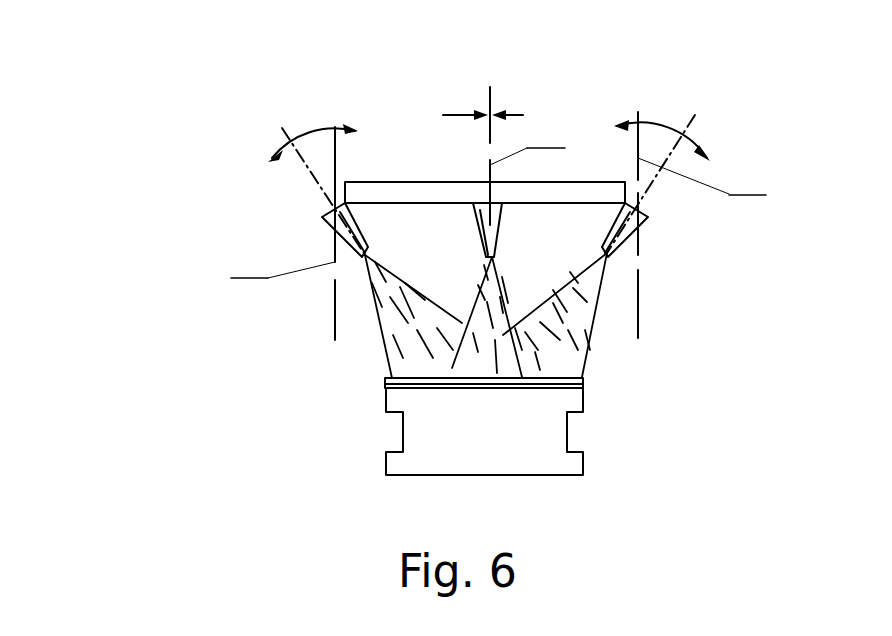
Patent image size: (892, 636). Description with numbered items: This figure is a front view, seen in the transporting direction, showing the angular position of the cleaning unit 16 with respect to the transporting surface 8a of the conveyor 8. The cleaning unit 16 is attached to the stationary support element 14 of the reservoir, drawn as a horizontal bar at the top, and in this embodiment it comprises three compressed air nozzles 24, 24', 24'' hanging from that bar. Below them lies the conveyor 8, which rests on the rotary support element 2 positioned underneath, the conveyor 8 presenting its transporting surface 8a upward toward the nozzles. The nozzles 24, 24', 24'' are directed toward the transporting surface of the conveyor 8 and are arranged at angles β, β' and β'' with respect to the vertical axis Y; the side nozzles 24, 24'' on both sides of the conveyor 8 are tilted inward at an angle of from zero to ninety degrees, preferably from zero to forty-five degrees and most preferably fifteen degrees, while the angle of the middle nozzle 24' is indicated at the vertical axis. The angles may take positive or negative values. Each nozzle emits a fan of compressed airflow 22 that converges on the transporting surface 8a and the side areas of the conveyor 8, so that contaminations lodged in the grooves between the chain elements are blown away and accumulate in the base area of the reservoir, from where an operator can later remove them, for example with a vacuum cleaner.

The cleaning unit 16 is at (150, 95).
The stationary support element 14 is at (565, 188).
The compressed air nozzle 24 is at (297, 230).
The compressed air nozzle 24' is at (441, 177).
The compressed air nozzle 24'' is at (692, 230).
The compressed airflow 22 is at (495, 312).
The conveyor 8 is at (585, 380).
The transporting surface 8a is at (600, 354).
The rotary support element 2 is at (423, 465).